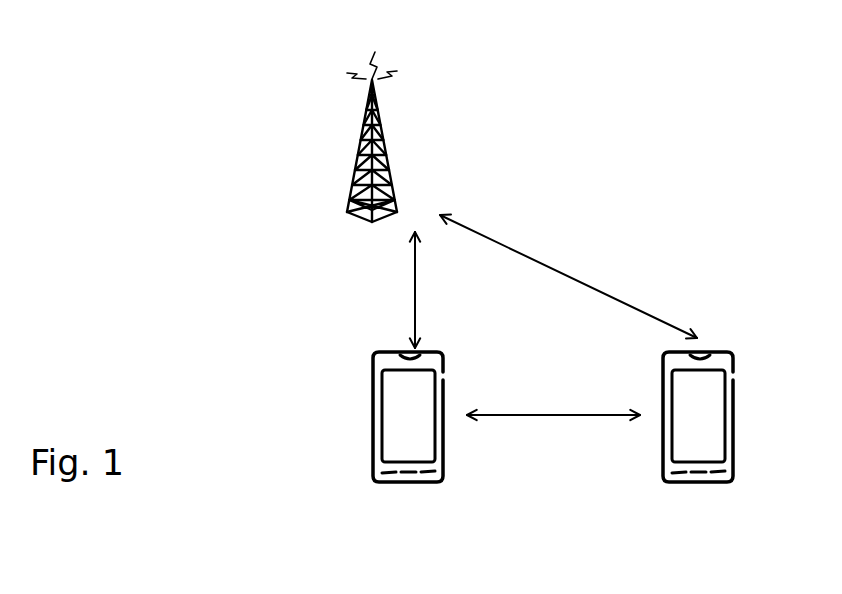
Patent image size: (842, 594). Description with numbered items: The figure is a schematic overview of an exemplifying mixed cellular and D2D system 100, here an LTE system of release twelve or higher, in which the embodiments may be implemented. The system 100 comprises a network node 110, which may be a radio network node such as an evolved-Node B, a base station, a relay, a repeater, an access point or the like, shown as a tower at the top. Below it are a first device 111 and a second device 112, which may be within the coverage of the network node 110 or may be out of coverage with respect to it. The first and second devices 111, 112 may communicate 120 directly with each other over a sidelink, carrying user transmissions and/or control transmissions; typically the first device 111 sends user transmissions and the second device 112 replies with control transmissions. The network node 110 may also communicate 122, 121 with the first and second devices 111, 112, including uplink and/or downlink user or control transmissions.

The mixed cellular and D2D system 100 is at (275, 141).
The network node 110 is at (427, 137).
The first device 111 is at (408, 417).
The second device 112 is at (698, 417).
The communication between the first and second devices 120 is at (553, 396).
The communication between the network node and the second device 121 is at (568, 277).
The communication between the network node and the first device 122 is at (437, 290).